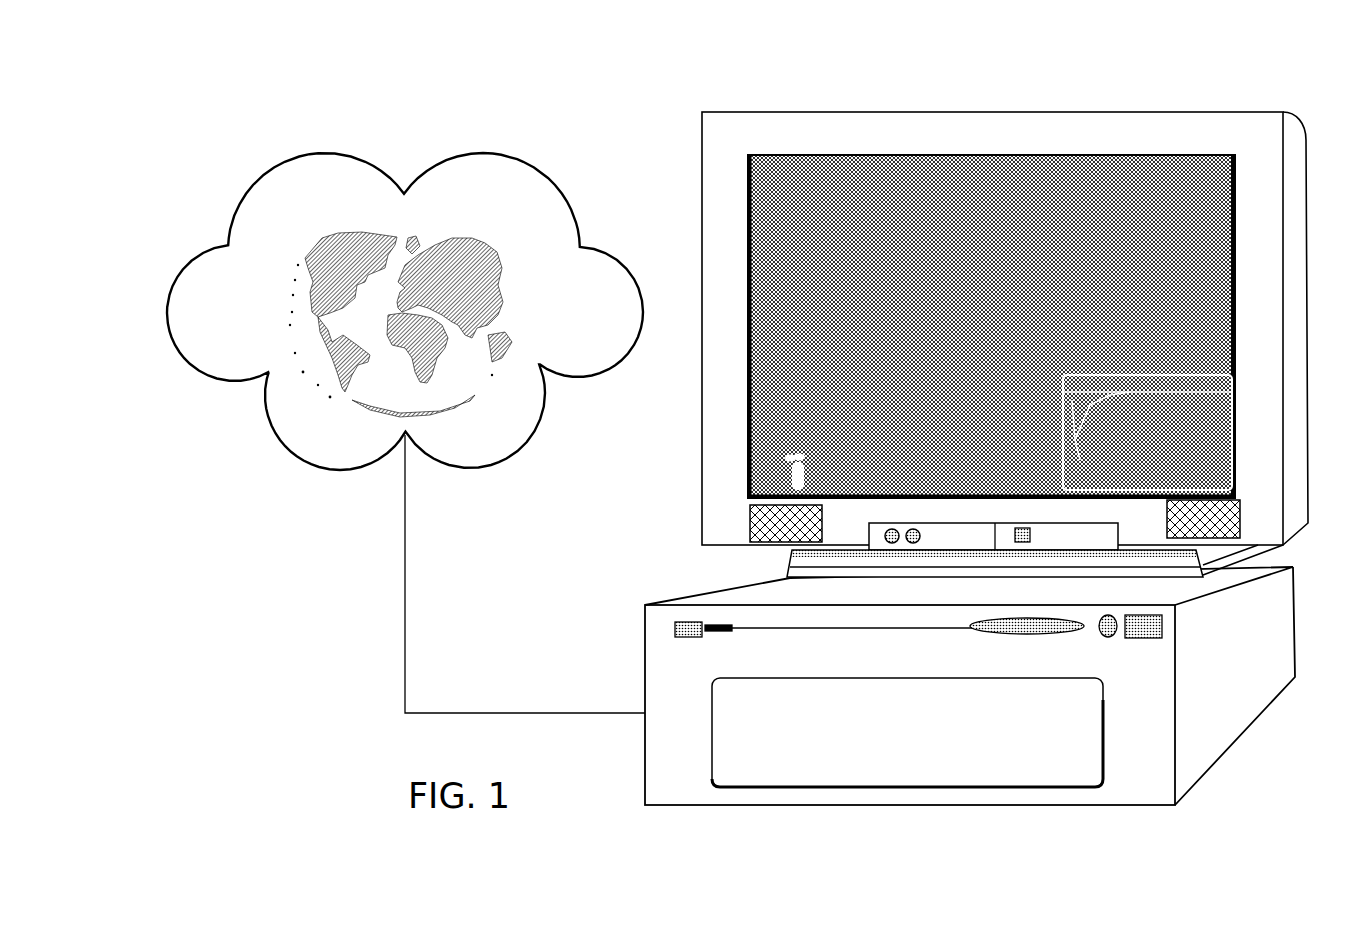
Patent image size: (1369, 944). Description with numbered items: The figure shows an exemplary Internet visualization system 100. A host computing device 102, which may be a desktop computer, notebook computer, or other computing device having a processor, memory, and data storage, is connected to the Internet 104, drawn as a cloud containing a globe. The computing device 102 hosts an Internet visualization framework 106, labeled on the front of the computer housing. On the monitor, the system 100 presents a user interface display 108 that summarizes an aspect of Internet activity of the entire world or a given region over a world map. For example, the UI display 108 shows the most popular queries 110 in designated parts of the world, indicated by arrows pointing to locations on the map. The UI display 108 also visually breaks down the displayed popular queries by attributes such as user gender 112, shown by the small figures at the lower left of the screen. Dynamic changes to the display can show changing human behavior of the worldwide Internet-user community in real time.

The Internet visualization system 100 is at (655, 54).
The host computing device 102 is at (706, 670).
The Internet 104 is at (465, 218).
The Internet visualization framework 106 is at (923, 752).
The user interface display 108 is at (884, 192).
The most popular queries 110 is at (1157, 310).
The user gender 112 is at (800, 438).